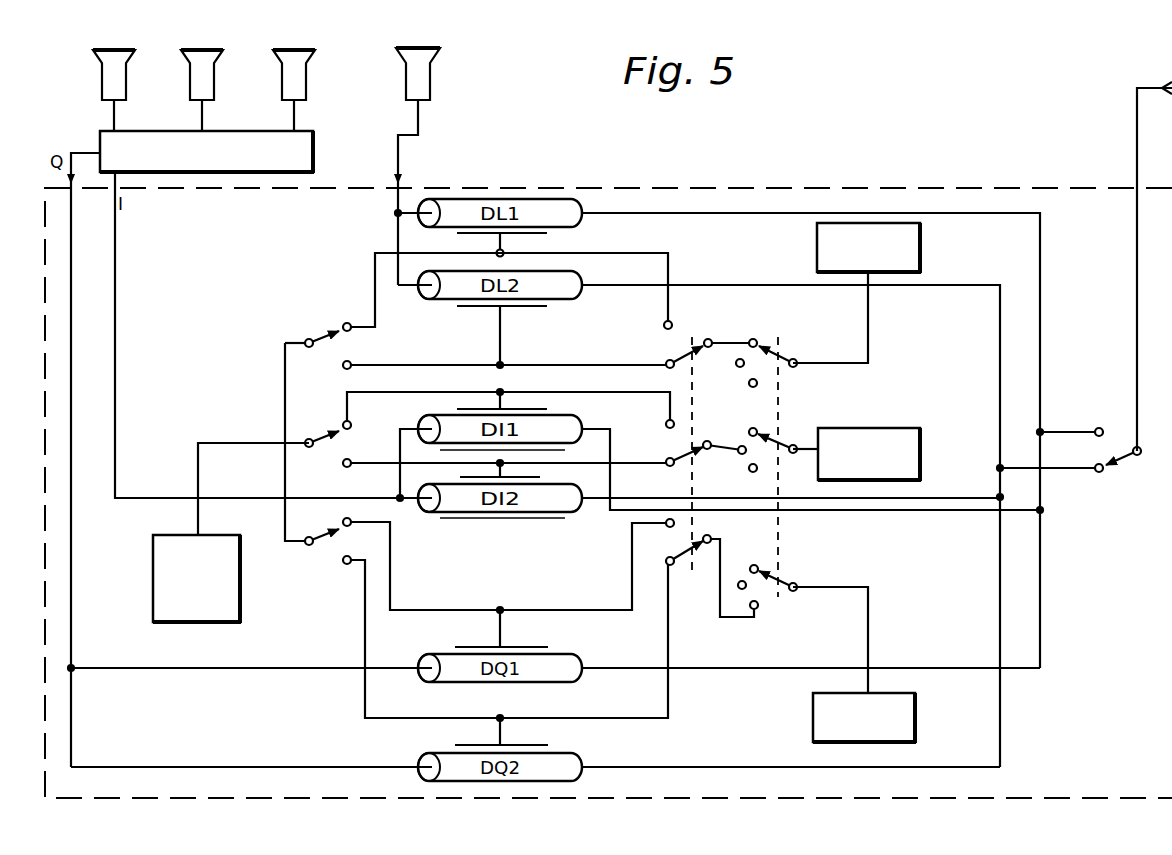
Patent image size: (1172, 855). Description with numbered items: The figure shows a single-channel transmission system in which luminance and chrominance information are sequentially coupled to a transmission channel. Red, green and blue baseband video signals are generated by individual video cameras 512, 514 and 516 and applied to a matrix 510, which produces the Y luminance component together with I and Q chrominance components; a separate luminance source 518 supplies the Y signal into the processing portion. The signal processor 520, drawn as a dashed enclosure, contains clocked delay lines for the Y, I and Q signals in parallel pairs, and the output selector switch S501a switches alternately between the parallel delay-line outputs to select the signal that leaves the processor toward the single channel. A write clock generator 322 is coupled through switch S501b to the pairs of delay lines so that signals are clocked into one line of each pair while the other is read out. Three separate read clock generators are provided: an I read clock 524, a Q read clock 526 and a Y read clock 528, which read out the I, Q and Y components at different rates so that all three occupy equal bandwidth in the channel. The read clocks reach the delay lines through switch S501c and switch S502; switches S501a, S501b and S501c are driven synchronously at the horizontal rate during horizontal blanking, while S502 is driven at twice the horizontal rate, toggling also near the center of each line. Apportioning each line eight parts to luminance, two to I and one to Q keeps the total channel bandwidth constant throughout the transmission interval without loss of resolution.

The matrix 510 is at (319, 146).
The red video camera 512 is at (102, 88).
The green video camera 514 is at (199, 100).
The blue video camera 516 is at (284, 99).
The luminance signal source 518 is at (398, 82).
The signal processor 520 is at (592, 186).
The I read clock generator 524 is at (926, 447).
The Q read clock generator 526 is at (918, 716).
The Y read clock generator 528 is at (928, 253).
The write clock generator 322 is at (152, 572).
The output selector switch S501a is at (1086, 267).
The write clock selector switch S501b is at (311, 424).
The read clock selector switch S501c is at (767, 614).
The read clock switch S502 is at (767, 434).